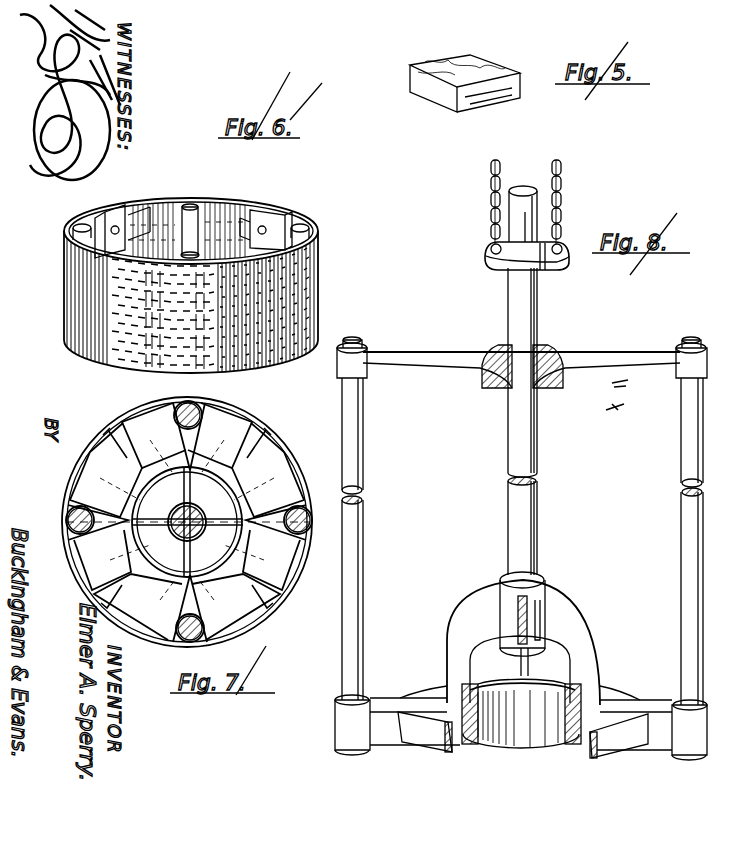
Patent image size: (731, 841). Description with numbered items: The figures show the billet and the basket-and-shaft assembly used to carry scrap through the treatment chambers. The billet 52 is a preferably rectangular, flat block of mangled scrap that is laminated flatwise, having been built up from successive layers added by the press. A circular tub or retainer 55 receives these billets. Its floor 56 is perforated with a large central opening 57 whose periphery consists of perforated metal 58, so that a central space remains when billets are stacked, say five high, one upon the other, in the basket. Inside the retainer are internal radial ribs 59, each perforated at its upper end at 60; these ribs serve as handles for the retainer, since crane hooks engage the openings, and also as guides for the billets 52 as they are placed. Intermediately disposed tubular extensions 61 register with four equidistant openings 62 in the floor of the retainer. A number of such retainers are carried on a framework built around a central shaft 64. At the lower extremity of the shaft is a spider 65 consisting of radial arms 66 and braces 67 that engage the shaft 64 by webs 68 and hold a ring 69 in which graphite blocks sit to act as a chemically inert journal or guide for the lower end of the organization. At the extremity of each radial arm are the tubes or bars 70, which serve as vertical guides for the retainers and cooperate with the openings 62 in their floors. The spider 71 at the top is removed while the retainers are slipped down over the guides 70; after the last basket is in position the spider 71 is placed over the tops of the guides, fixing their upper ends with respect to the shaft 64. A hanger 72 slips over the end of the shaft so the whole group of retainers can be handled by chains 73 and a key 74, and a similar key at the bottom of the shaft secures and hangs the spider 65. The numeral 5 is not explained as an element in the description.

In FIG. 7, the gyroscope apparatus 5 is at (258, 430).
In FIG. 5, the billet 52 is at (406, 70).
In FIG. 7, the billet 52 is at (187, 522).
In FIG. 6, the retainer 55 is at (188, 266).
In FIG. 7, the retainer 55 is at (172, 519).
In FIG. 7, the floor 56 is at (108, 596).
In FIG. 7, the central opening 57 is at (188, 522).
In FIG. 6, the perforated metal 58 is at (64, 290).
In FIG. 6, the internal radial rib 59 is at (150, 210).
In FIG. 7, the internal radial rib 59 is at (270, 444).
In FIG. 6, the perforation 60 is at (117, 212).
In FIG. 6, the tubular extension 61 is at (309, 226).
In FIG. 7, the tubular extension 61 is at (198, 407).
In FIG. 7, the opening 62 is at (184, 406).
In FIG. 7, the central shaft 64 is at (197, 514).
In FIG. 8, the central shaft 64 is at (509, 314).
In FIG. 8, the spider 65 is at (521, 538).
In FIG. 8, the radial arm 66 is at (436, 712).
In FIG. 8, the brace 67 is at (626, 738).
In FIG. 8, the web 68 is at (523, 638).
In FIG. 8, the ring 69 is at (575, 742).
In FIG. 8, the guide tube 70 is at (366, 544).
In FIG. 8, the upper spider 71 is at (605, 351).
In FIG. 8, the hanger 72 is at (545, 270).
In FIG. 8, the chain 73 is at (491, 196).
In FIG. 8, the key 74 is at (545, 606).